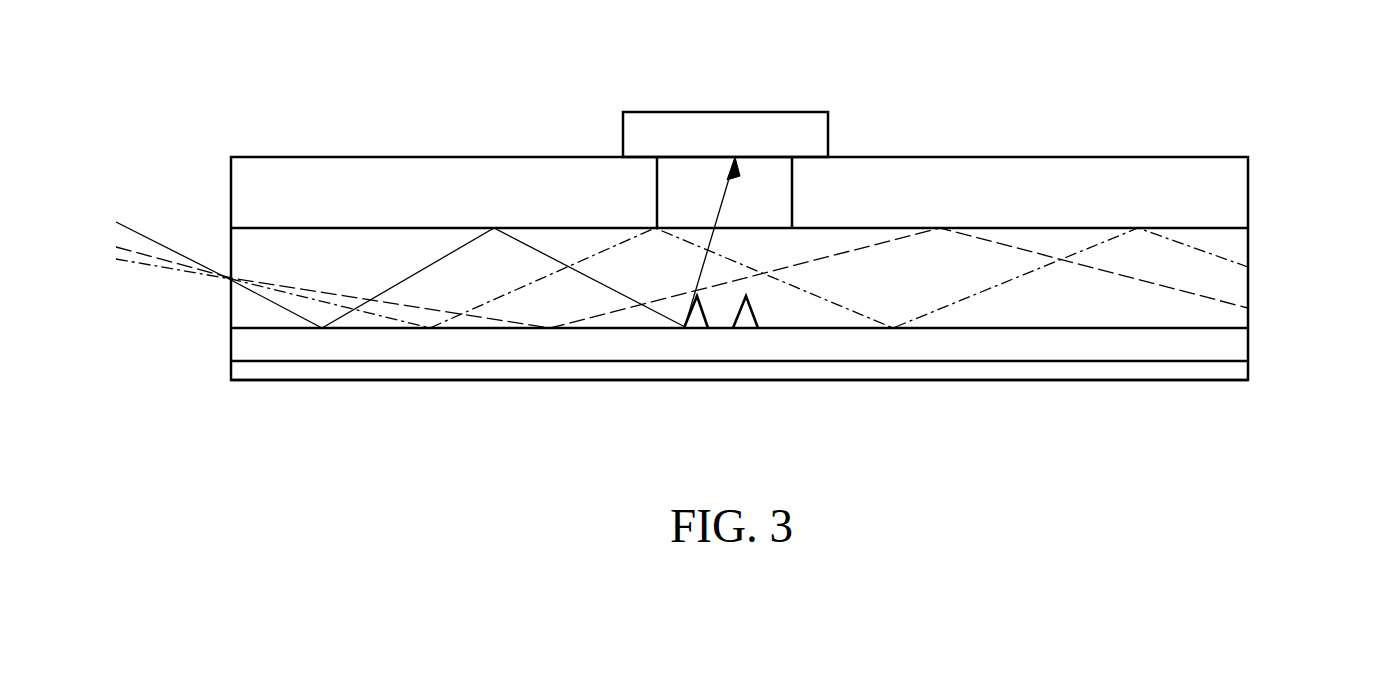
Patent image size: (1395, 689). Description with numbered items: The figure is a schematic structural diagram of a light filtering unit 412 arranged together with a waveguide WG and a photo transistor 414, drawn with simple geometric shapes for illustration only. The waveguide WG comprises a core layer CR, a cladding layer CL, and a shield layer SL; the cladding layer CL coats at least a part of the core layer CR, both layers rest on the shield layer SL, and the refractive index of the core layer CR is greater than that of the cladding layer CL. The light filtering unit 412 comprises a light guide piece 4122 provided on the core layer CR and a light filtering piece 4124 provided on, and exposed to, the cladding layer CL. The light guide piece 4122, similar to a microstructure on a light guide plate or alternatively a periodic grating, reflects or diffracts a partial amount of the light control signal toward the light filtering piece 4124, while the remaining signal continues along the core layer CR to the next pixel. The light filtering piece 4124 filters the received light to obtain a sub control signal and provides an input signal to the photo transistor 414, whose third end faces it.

The photo transistor 414 is at (726, 126).
The light filtering unit 412 is at (740, 323).
The light guide piece 4122 is at (696, 320).
The light filtering piece 4124 is at (772, 202).
The waveguide WG is at (1322, 175).
The cladding layer CL is at (1240, 197).
The core layer CR is at (1240, 276).
The shield layer SL is at (1240, 372).